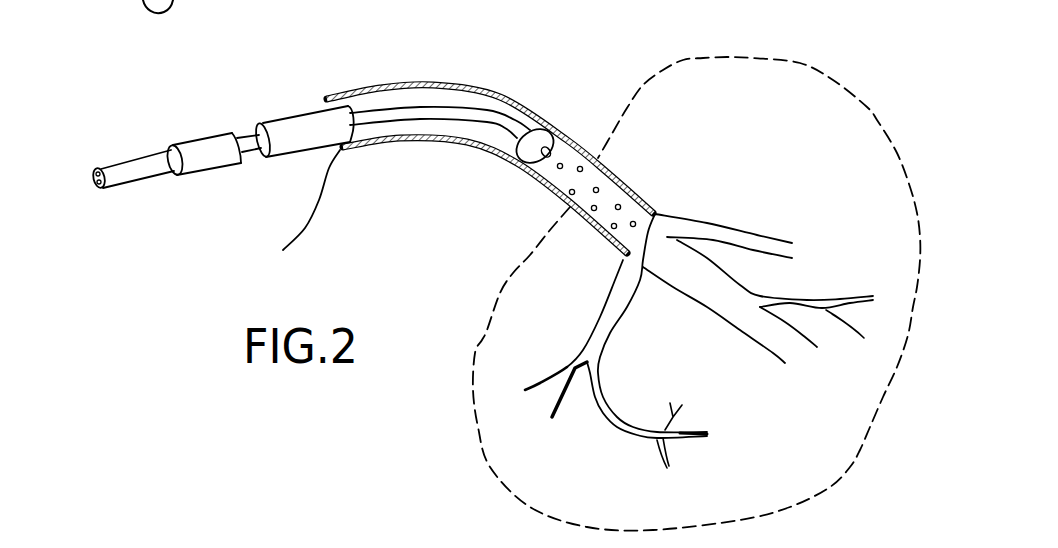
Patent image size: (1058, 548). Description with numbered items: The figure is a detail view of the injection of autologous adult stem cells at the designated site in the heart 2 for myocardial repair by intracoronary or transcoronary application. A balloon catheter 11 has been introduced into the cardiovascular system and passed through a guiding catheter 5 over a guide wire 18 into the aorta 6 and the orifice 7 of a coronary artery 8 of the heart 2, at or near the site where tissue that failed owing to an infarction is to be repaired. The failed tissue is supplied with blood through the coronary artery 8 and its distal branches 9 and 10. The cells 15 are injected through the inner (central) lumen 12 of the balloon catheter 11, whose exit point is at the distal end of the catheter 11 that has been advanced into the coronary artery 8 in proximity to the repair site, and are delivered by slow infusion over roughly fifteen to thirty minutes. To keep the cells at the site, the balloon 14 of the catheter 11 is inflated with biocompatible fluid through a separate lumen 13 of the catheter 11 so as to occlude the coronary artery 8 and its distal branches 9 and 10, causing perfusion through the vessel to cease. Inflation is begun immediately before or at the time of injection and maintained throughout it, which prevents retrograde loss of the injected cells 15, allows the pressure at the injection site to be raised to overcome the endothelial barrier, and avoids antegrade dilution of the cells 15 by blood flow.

The heart 2 is at (503, 343).
The guiding catheter 5 is at (207, 138).
The aorta 6 is at (323, 207).
The orifice 7 is at (327, 105).
The coronary artery 8 is at (435, 84).
The distal branch 9 is at (724, 230).
The distal branch 10 is at (808, 306).
The balloon catheter 11 is at (492, 108).
The inner (central) lumen 12 is at (550, 152).
The separate lumen 13 is at (94, 188).
The balloon 14 is at (522, 157).
The cells 15 is at (618, 200).
The guide wire 18 is at (262, 156).